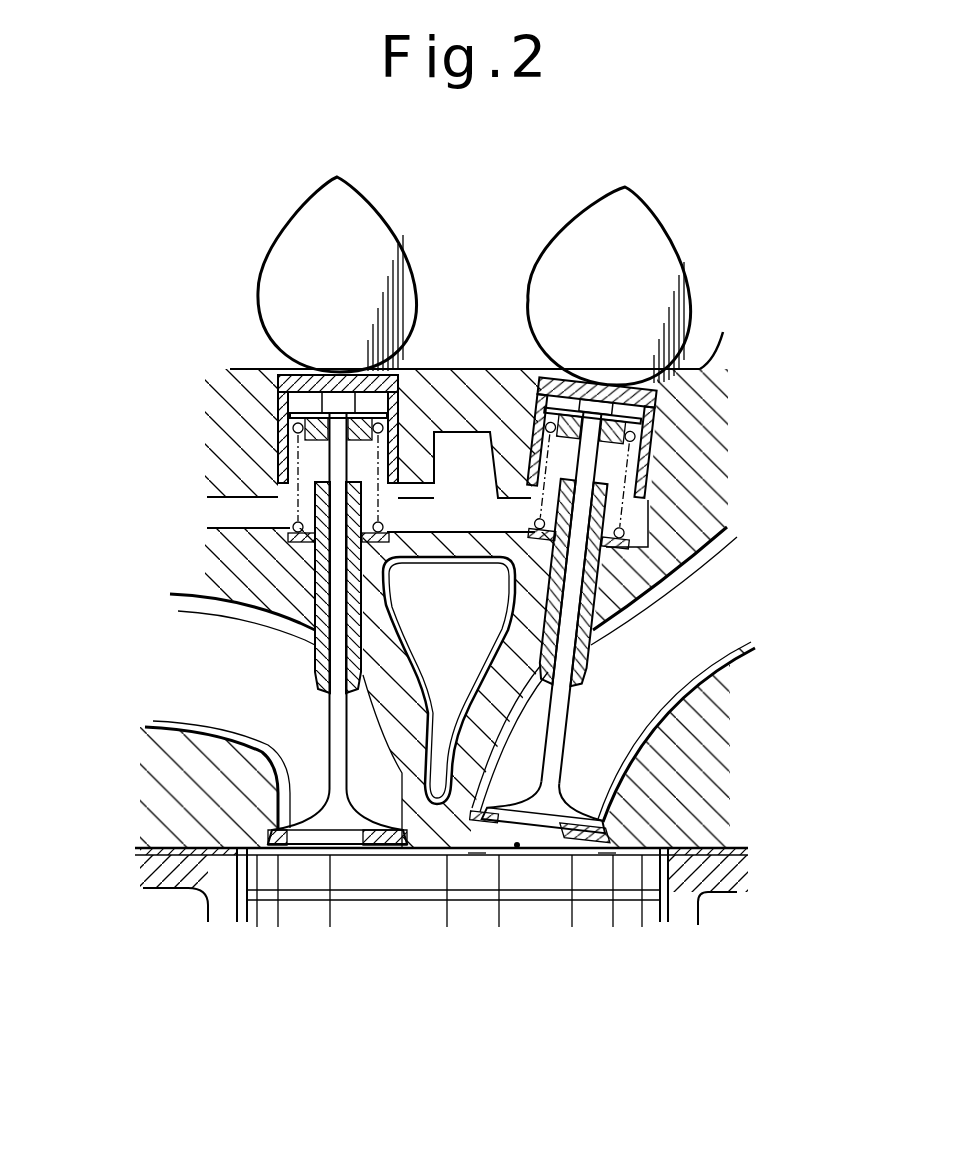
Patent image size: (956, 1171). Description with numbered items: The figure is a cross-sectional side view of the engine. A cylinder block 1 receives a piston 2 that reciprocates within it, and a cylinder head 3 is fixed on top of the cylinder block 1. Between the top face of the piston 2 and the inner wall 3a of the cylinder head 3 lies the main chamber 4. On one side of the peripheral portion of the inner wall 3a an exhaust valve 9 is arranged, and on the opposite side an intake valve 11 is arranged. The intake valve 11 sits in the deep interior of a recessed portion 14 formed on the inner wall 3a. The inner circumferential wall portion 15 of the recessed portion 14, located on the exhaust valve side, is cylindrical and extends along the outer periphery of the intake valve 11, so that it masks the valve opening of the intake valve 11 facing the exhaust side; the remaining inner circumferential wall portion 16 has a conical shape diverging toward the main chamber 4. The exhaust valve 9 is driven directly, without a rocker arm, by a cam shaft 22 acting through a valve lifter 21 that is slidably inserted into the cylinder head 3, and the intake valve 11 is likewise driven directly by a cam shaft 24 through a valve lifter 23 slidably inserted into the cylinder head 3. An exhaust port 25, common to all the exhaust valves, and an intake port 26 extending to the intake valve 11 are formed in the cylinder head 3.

The cylinder block 1 is at (683, 917).
The piston 2 is at (633, 917).
The cylinder head 3 is at (708, 468).
The inner wall of the cylinder head 3a is at (447, 897).
The main chamber 4 is at (423, 853).
The exhaust valve 9 is at (330, 737).
The intake valve 11 is at (557, 740).
The recessed portion 14 is at (517, 845).
The cylindrical inner circumferential wall portion 15 is at (477, 853).
The conical inner circumferential wall portion 16 is at (607, 853).
The valve lifter 21 is at (400, 372).
The cam shaft 22 is at (380, 237).
The valve lifter 23 is at (663, 393).
The cam shaft 24 is at (663, 238).
The exhaust port 25 is at (203, 687).
The intake port 26 is at (695, 660).